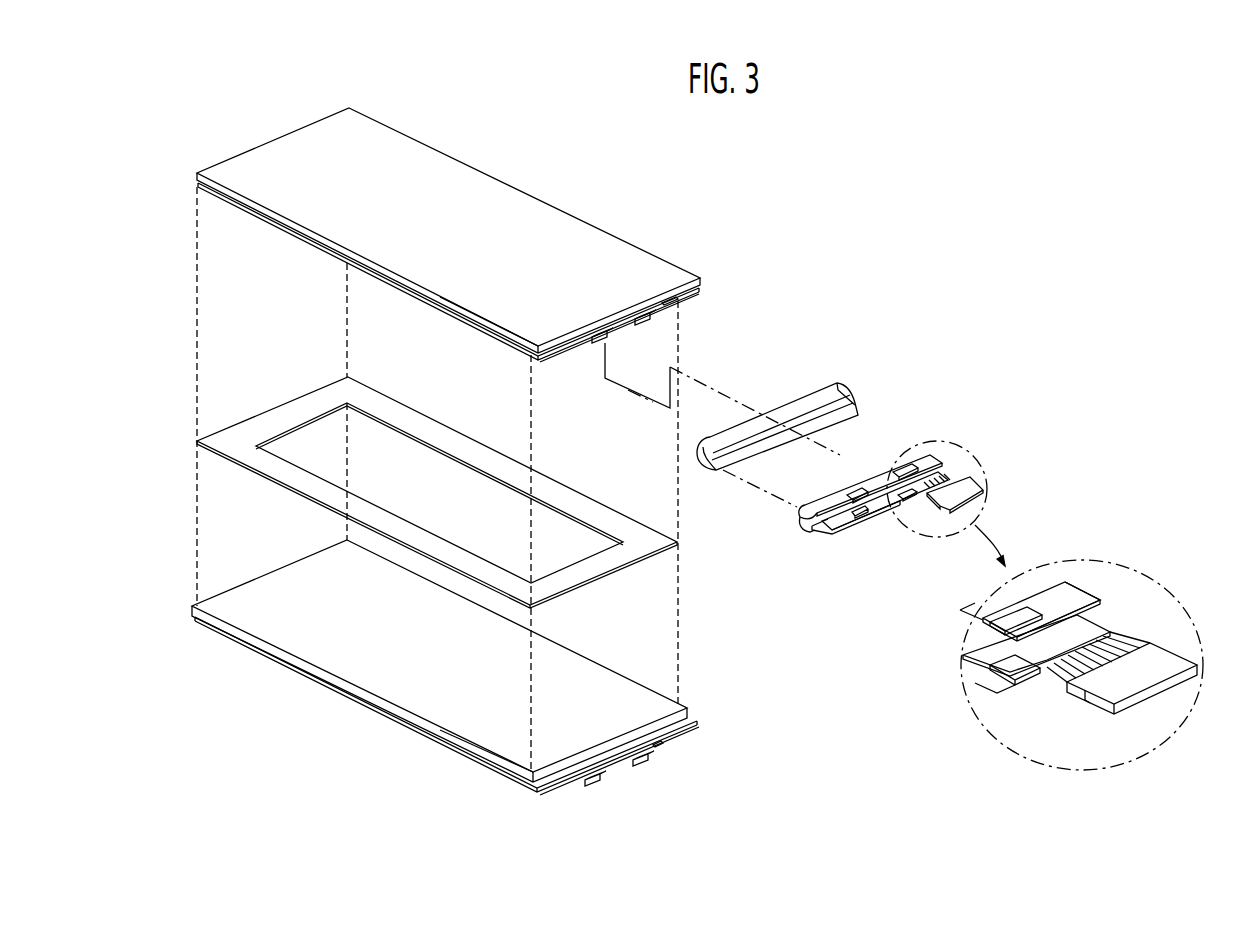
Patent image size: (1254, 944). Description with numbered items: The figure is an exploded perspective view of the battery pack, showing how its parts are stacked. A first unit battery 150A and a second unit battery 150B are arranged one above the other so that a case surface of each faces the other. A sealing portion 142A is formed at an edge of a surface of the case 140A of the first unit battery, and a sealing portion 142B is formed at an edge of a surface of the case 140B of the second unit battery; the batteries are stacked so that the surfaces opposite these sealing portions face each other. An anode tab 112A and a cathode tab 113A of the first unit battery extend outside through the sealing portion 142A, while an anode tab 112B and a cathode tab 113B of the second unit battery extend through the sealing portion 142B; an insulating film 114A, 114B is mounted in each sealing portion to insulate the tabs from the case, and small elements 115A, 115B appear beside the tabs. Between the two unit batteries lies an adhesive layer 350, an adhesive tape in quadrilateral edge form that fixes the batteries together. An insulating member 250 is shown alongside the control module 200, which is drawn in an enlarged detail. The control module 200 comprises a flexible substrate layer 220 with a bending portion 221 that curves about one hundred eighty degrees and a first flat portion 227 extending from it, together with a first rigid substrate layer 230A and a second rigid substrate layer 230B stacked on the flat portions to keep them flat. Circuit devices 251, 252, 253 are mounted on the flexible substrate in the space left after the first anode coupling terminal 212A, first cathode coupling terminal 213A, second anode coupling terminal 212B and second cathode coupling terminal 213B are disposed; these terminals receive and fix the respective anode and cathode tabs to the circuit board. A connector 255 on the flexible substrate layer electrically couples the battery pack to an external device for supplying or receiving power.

The first unit battery 150A is at (536, 172).
The second unit battery 150B is at (658, 684).
The case of the first unit battery 140A is at (595, 263).
The case of the second unit battery 140B is at (398, 673).
The sealing portion of the first unit battery 142A is at (562, 338).
The sealing portion of the second unit battery 142B is at (538, 787).
The film 114A is at (603, 322).
The film 114B is at (657, 740).
The anode tab of the first unit battery 112A is at (610, 336).
The anode tab of the second unit battery 112B is at (648, 760).
The cathode tab of the first unit battery 113A is at (657, 316).
The cathode tab of the second unit battery 113B is at (603, 780).
The third pad of first display panel 115A is at (668, 301).
The third pad of second display panel 115B is at (582, 780).
The adhesive layer 350 is at (583, 490).
The insulating member 250 is at (775, 403).
The control module 200 is at (852, 503).
The bending portion 221 is at (801, 518).
The circuit device 251 is at (890, 500).
The circuit device 252 is at (827, 533).
The circuit device 253 is at (827, 498).
The first anode coupling terminal 212A is at (853, 487).
The second anode coupling terminal 212B is at (993, 692).
The first cathode coupling terminal 213A is at (907, 465).
The second cathode coupling terminal 213B is at (863, 517).
The flexible substrate layer 220 is at (1084, 591).
The first flat portion 227 is at (1057, 597).
The first rigid substrate layer 230A is at (1107, 600).
The second rigid substrate layer 230B is at (1101, 618).
The connector 255 is at (1174, 650).